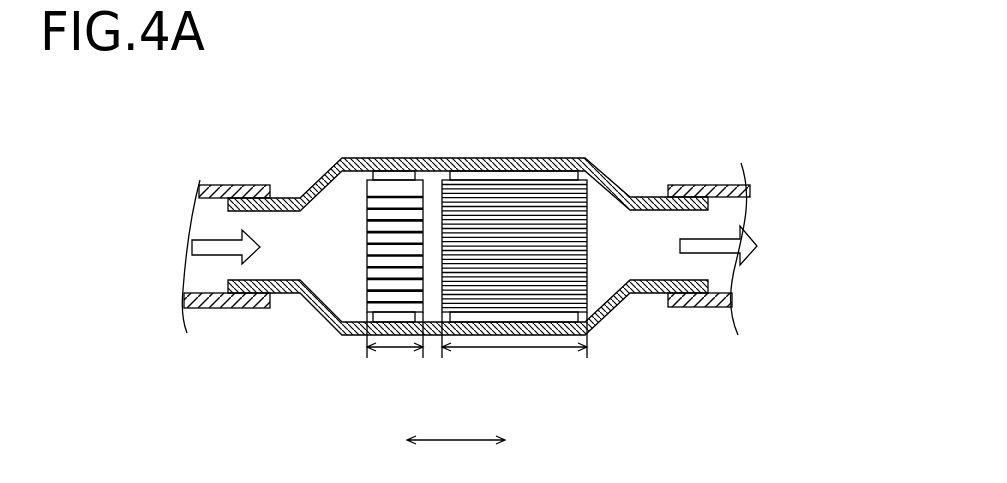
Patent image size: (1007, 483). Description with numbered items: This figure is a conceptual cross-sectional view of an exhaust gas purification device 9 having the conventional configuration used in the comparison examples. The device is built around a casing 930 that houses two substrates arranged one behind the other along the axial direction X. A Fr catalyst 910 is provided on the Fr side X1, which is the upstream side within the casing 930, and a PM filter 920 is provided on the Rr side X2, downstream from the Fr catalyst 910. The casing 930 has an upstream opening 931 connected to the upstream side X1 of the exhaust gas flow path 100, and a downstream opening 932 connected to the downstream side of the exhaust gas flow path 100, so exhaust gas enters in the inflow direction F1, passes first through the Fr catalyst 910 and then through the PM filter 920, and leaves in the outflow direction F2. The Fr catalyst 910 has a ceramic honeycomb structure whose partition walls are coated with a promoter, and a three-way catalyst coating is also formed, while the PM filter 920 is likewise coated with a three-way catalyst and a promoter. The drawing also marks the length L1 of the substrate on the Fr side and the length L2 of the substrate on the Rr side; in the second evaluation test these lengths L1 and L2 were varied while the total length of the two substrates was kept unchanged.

The exhaust gas purification device 9 is at (468, 235).
The exhaust gas flow path 100 is at (234, 192).
The Fr catalyst 910 is at (393, 191).
The PM filter 920 is at (506, 191).
The casing 930 is at (571, 160).
The upstream opening 931 is at (283, 295).
The downstream opening 932 is at (655, 294).
The exhaust gas inflow direction F1 is at (215, 248).
The exhaust gas outflow direction F2 is at (716, 247).
The length of the Fr-side substrate L1 is at (395, 349).
The length of the Rr-side substrate L2 is at (510, 349).
The axial direction X is at (456, 455).
The Fr side X1 is at (383, 450).
The Rr side X2 is at (526, 450).